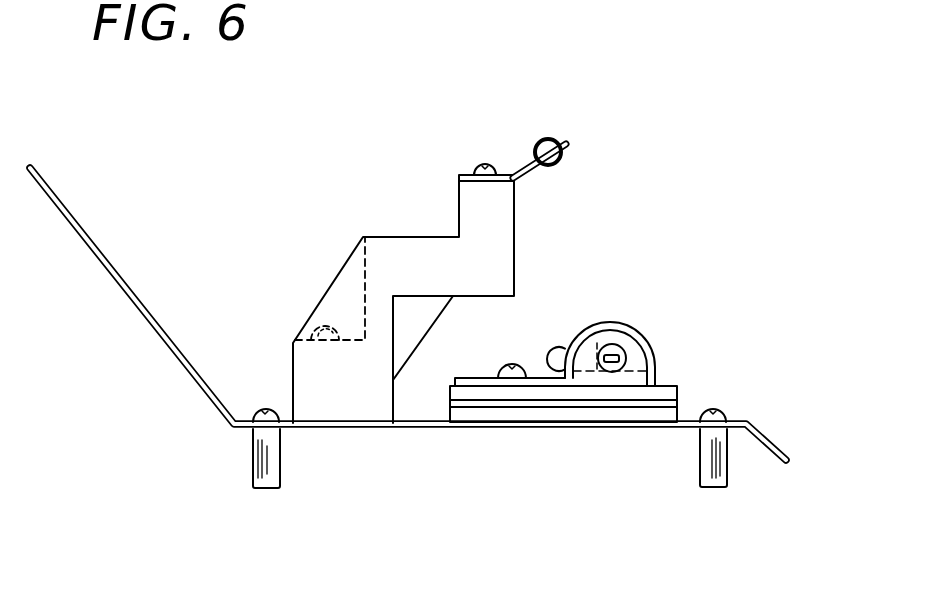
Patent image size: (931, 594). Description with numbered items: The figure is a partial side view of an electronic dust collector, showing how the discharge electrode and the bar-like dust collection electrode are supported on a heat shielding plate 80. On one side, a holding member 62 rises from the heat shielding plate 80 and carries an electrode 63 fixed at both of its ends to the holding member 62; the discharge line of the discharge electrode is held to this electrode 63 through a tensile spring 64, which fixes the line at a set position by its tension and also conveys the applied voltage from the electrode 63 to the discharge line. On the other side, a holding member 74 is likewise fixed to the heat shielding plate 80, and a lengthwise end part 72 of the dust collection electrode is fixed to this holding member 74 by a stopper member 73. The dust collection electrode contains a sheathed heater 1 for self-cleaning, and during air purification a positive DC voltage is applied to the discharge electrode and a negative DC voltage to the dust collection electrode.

The sheathed heater 1 is at (562, 343).
The holding member 62 is at (392, 248).
The electrode 63 is at (535, 165).
The tensile spring 64 is at (561, 160).
The lengthwise end part 72 is at (642, 367).
The stopper member 73 is at (648, 343).
The holding member 74 is at (568, 397).
The heat shielding plate 80 is at (432, 428).